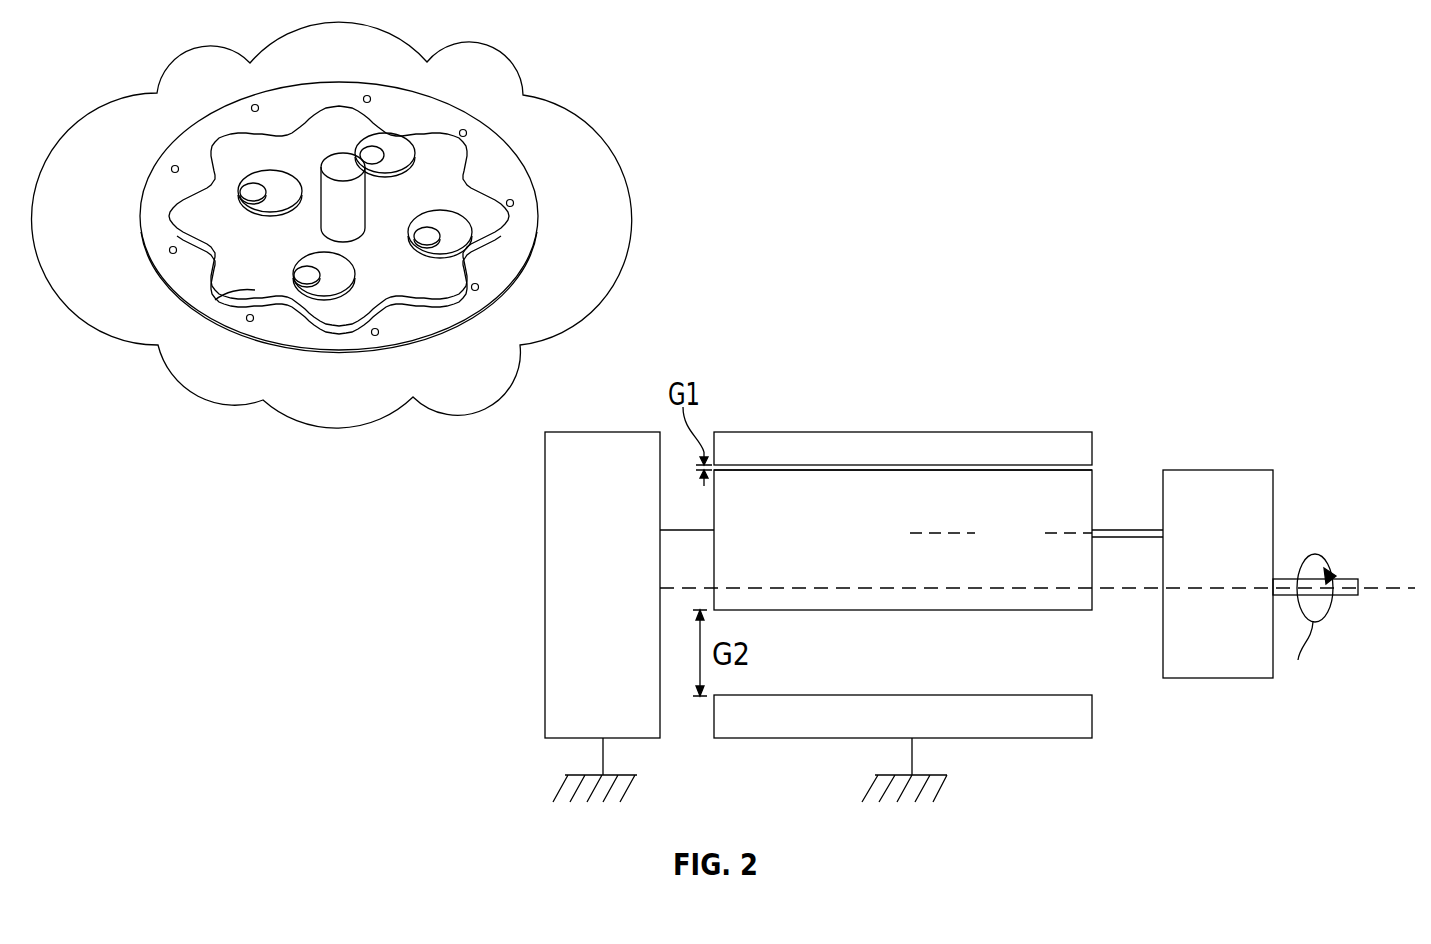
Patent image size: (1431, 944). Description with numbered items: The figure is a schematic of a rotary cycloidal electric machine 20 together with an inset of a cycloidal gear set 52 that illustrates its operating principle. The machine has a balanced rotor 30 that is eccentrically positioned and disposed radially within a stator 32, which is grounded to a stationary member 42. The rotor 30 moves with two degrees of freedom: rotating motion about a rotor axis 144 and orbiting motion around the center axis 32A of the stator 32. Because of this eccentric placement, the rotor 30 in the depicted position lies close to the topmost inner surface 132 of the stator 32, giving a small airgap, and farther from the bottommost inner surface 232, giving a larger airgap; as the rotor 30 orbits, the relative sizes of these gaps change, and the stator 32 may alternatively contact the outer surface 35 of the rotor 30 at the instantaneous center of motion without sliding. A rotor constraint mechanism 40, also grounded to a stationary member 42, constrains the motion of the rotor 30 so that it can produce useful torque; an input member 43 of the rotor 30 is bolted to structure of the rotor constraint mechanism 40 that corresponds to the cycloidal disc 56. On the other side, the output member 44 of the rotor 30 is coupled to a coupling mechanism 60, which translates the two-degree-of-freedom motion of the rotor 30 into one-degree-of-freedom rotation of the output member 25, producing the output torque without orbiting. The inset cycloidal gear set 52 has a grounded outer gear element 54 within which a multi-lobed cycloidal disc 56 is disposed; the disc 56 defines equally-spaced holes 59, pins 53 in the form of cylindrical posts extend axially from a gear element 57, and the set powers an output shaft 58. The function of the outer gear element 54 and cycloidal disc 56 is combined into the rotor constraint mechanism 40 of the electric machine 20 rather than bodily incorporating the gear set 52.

The rotary cycloidal electric machine 20 is at (1185, 293).
The output member 25 is at (1343, 578).
The balanced rotor 30 is at (822, 553).
The stator 32 is at (993, 467).
The center axis of the stator 32A is at (1128, 590).
The outer surface of the rotor 35 is at (985, 610).
The rotor constraint mechanism 40 is at (545, 447).
The stationary member 42 is at (562, 790).
The input member 43 is at (697, 532).
The output member of the rotor 44 is at (1113, 530).
The cycloidal gear set 52 is at (603, 102).
The pins 53 is at (303, 287).
The stationary outer gear element 54 is at (230, 118).
The cycloidal disc 56 is at (240, 292).
The gear element 57 is at (492, 208).
The output shaft 58 is at (343, 160).
The equally-spaced holes 59 is at (340, 292).
The coupling mechanism 60 is at (1228, 470).
The topmost inner surface of the stator 132 is at (1074, 472).
The rotor axis 144 is at (913, 533).
The bottommost inner surface of the stator 232 is at (1057, 695).